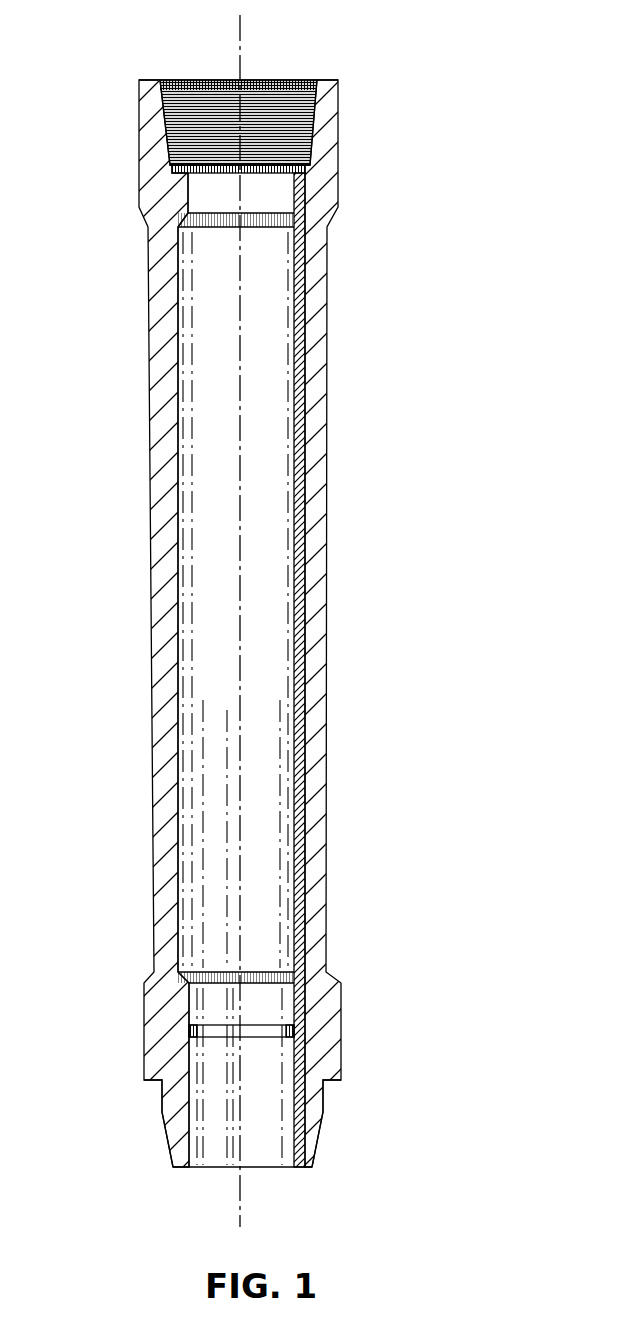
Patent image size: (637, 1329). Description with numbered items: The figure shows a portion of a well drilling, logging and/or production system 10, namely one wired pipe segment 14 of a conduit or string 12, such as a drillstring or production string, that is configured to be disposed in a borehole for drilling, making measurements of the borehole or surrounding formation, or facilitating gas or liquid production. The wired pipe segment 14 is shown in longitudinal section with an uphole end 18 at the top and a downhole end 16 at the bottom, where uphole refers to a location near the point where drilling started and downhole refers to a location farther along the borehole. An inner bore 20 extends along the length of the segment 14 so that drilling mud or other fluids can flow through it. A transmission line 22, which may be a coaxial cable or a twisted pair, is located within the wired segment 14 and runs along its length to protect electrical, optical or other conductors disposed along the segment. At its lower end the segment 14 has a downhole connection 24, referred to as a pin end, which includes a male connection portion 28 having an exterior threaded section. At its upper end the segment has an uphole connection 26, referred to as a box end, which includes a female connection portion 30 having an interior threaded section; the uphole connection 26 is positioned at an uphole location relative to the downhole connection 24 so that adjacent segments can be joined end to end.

The well drilling, logging and/or production system 10 is at (111, 36).
The conduit or string 12 is at (424, 595).
The wired pipe segment 14 is at (165, 813).
The downhole end 16 is at (216, 1168).
The uphole end 18 is at (285, 78).
The inner bore 20 is at (238, 452).
The transmission line 22 is at (302, 258).
The downhole connection 24 is at (172, 1102).
The uphole connection 26 is at (157, 148).
The male connection portion 28 is at (325, 1114).
The female connection portion 30 is at (312, 135).